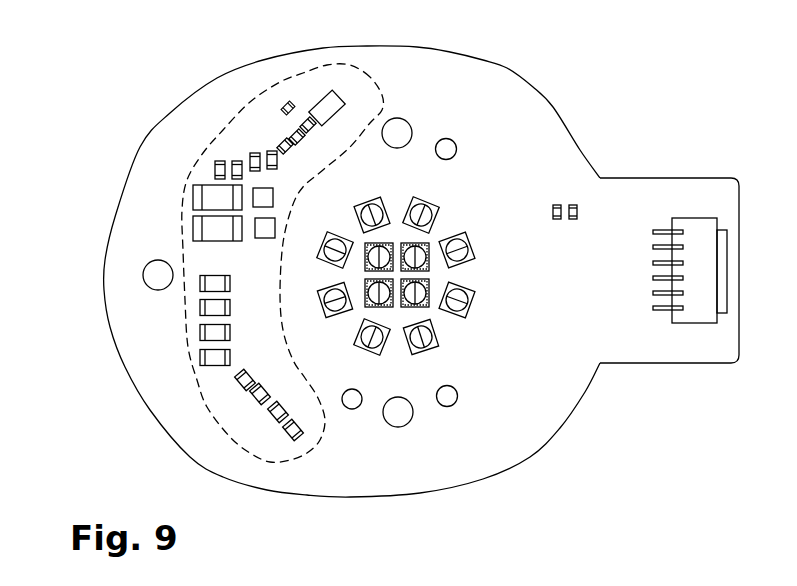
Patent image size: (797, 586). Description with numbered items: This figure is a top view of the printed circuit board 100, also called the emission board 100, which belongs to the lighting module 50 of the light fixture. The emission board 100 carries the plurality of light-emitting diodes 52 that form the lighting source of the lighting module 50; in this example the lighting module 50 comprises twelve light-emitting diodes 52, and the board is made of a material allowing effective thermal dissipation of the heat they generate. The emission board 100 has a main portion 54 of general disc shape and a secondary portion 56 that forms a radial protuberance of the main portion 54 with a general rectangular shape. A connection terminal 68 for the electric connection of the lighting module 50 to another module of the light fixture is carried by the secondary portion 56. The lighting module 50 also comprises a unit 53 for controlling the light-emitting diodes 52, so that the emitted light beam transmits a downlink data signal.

The printed circuit board 100 is at (120, 411).
The lighting module 50 is at (491, 85).
The light-emitting diodes 52 is at (450, 250).
The unit for controlling the lighting source 53 is at (246, 452).
The main portion 54 is at (483, 479).
The secondary portion 56 is at (677, 363).
The connection terminal 68 is at (697, 225).